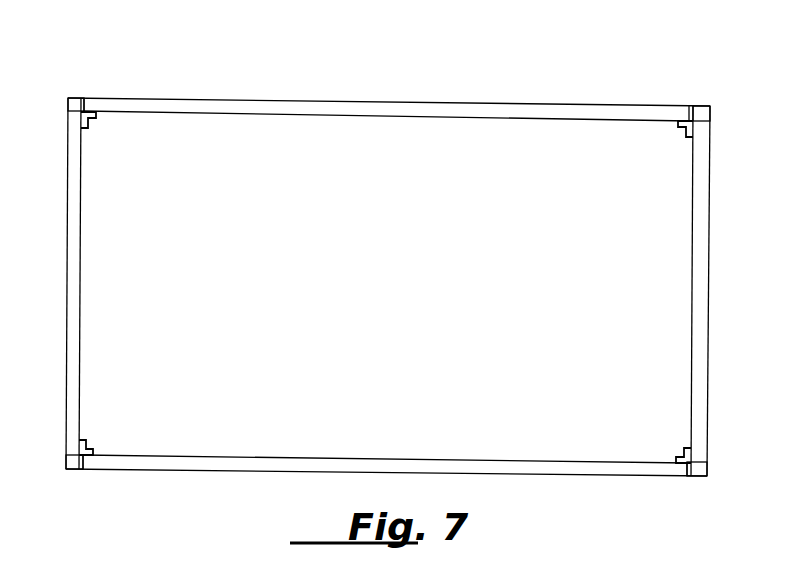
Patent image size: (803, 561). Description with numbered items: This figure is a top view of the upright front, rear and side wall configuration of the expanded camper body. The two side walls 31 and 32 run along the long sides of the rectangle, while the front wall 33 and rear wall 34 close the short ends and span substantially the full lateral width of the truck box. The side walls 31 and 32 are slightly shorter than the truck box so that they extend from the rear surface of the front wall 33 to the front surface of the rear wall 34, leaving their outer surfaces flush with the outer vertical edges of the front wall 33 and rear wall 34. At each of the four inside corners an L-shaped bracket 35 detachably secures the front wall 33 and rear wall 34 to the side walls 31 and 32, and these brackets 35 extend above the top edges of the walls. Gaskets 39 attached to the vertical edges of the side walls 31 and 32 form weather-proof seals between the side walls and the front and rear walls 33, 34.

The side wall 31 is at (382, 108).
The side wall 32 is at (372, 468).
The front wall 33 is at (700, 342).
The rear wall 34 is at (74, 322).
The L-shaped bracket 35 is at (87, 118).
The gasket 39 is at (84, 99).